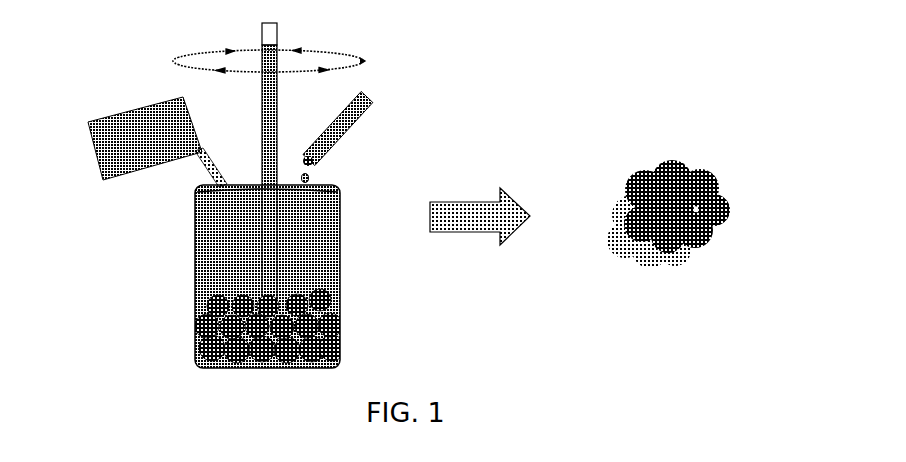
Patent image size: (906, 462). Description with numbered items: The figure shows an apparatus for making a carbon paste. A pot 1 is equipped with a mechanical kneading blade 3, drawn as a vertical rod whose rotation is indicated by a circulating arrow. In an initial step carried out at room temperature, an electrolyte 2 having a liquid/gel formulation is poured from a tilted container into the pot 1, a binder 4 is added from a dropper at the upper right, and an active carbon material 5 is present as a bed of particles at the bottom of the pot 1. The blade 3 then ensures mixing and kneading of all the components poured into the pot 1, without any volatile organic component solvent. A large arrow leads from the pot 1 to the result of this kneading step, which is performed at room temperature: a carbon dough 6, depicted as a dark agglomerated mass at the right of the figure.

The pot 1 is at (196, 260).
The electrolyte 2 is at (96, 161).
The mechanical kneading blade 3 is at (263, 41).
The binder 4 is at (366, 119).
The active carbon material 5 is at (325, 297).
The carbon dough 6 is at (728, 195).